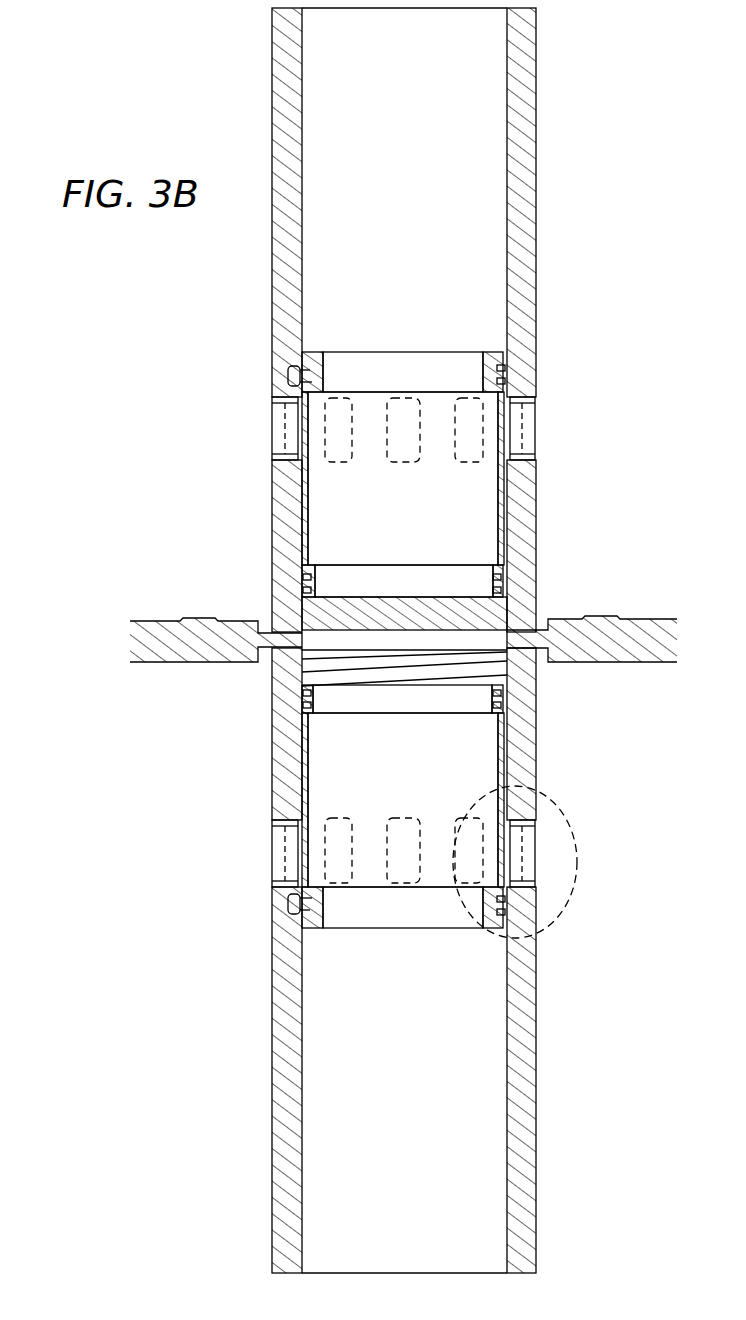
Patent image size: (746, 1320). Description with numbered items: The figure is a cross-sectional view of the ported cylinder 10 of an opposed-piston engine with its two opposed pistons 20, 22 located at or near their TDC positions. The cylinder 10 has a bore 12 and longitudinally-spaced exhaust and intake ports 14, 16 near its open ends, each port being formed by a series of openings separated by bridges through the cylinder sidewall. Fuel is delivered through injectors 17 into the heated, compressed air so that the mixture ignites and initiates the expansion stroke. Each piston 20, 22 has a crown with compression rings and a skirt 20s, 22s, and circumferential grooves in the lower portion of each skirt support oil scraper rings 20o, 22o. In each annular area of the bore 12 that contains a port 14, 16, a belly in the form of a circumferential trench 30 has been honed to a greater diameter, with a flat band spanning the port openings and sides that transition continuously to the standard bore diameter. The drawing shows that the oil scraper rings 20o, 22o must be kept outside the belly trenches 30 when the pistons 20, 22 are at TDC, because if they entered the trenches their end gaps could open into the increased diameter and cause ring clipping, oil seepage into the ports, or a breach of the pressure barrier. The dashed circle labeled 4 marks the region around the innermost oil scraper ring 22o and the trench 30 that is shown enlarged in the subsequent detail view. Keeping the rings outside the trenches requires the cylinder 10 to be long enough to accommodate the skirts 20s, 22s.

The ported cylinder 10 is at (536, 116).
The bore 12 is at (421, 99).
The exhaust port 14 is at (553, 428).
The intake port 16 is at (254, 852).
The injector 17 is at (193, 620).
The piston 20 is at (399, 346).
The oil scraper ring 20o is at (289, 376).
The piston skirt 20s is at (302, 510).
The piston 22 is at (398, 936).
The oil scraper ring 22o is at (289, 906).
The piston skirt 22s is at (300, 762).
The circumferential trench 30 is at (515, 390).
The detail region of FIG. 4 is at (555, 795).